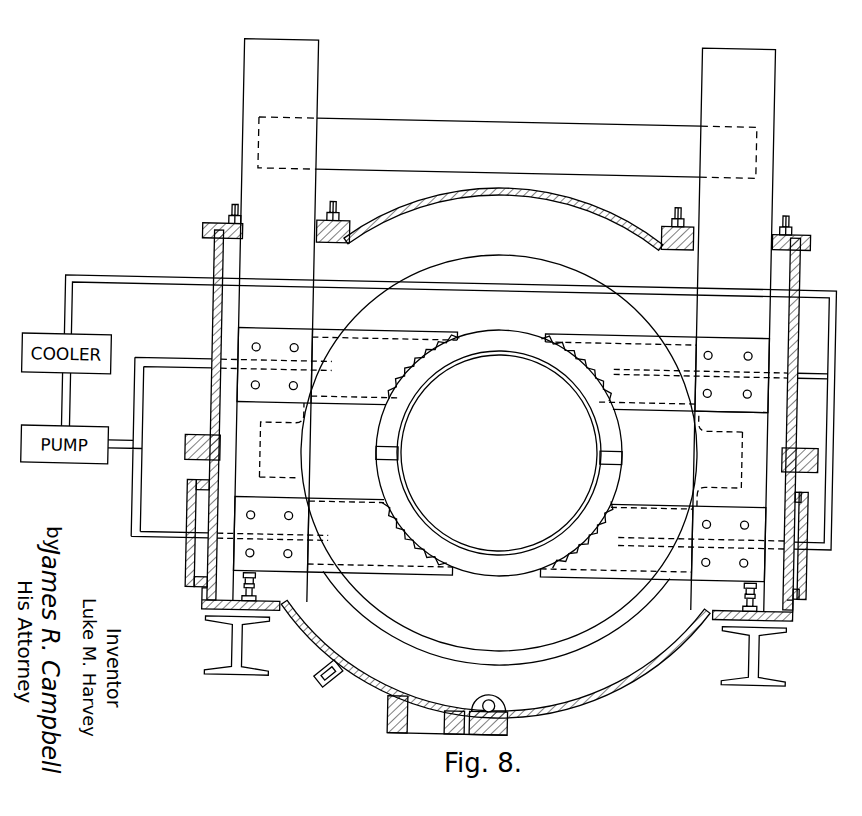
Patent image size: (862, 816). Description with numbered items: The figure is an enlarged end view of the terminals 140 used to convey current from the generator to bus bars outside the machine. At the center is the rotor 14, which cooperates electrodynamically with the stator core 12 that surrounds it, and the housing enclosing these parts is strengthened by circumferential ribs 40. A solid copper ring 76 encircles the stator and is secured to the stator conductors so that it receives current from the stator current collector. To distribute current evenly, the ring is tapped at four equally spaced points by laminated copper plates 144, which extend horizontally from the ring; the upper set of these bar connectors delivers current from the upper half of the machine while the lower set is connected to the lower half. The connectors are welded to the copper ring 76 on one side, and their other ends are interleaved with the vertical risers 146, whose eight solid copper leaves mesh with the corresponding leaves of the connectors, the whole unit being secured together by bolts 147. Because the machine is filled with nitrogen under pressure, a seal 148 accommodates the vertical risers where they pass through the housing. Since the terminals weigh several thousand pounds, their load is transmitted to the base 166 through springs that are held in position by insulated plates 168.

The stator core 12 is at (486, 639).
The rotor 14 is at (489, 463).
The circumferential rib 40 is at (563, 683).
The copper ring 76 is at (479, 569).
The terminal 140 is at (340, 126).
The laminated copper plate 144 is at (296, 304).
The vertical riser 146 is at (212, 276).
The bolt 147 is at (746, 347).
The seal 148 is at (788, 230).
The base 166 is at (240, 673).
The insulated plate 168 is at (760, 589).